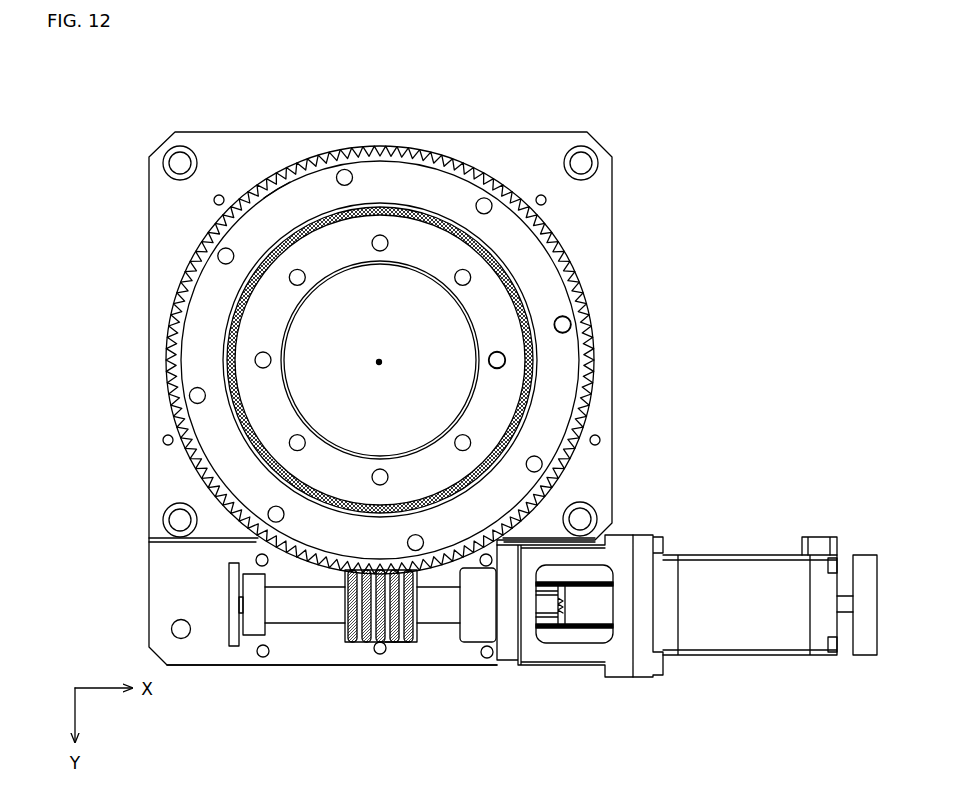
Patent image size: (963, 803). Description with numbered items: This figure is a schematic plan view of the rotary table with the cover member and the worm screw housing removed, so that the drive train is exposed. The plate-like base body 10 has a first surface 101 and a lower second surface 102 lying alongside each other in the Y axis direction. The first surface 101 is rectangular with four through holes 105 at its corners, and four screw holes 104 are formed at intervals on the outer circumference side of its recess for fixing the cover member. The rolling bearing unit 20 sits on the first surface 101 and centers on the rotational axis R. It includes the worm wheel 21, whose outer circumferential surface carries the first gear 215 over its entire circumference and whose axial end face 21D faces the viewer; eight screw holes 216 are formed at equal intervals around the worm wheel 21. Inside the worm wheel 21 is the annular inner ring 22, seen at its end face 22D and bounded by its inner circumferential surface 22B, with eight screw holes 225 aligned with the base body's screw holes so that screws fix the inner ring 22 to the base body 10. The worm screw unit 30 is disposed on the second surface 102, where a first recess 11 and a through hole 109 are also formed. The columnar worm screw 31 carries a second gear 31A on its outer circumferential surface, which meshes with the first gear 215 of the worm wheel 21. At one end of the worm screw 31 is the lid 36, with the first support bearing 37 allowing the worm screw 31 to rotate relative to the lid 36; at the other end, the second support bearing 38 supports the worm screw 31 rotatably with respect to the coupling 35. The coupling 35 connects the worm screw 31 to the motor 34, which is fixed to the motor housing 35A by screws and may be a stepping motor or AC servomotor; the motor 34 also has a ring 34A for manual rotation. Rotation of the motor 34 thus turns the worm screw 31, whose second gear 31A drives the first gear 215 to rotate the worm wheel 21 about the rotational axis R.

The base body 10 is at (149, 183).
The first surface 101 is at (158, 528).
The second surface 102 is at (158, 573).
The screw holes 104 is at (256, 557).
The through holes 105 is at (172, 148).
The through hole 109 is at (171, 632).
The rolling bearing unit 20 is at (384, 331).
The worm wheel 21 is at (386, 178).
The end face 21D is at (506, 232).
The first gear 215 is at (268, 190).
The screw holes 216 is at (572, 324).
The inner ring 22 is at (325, 245).
The end face 22D is at (305, 258).
The inner circumferential surface 22B is at (380, 284).
The screw holes 225 is at (506, 357).
The rotational axis R is at (383, 363).
The worm screw unit 30 is at (346, 660).
The worm screw 31 is at (298, 614).
The second gear 31A is at (397, 645).
The first recess 11 is at (378, 654).
The lid 36 is at (232, 607).
The first support bearing 37 is at (253, 637).
The second support bearing 38 is at (473, 632).
The coupling 35 is at (587, 615).
The motor housing 35A is at (618, 656).
The motor 34 is at (740, 641).
The ring 34A is at (865, 648).